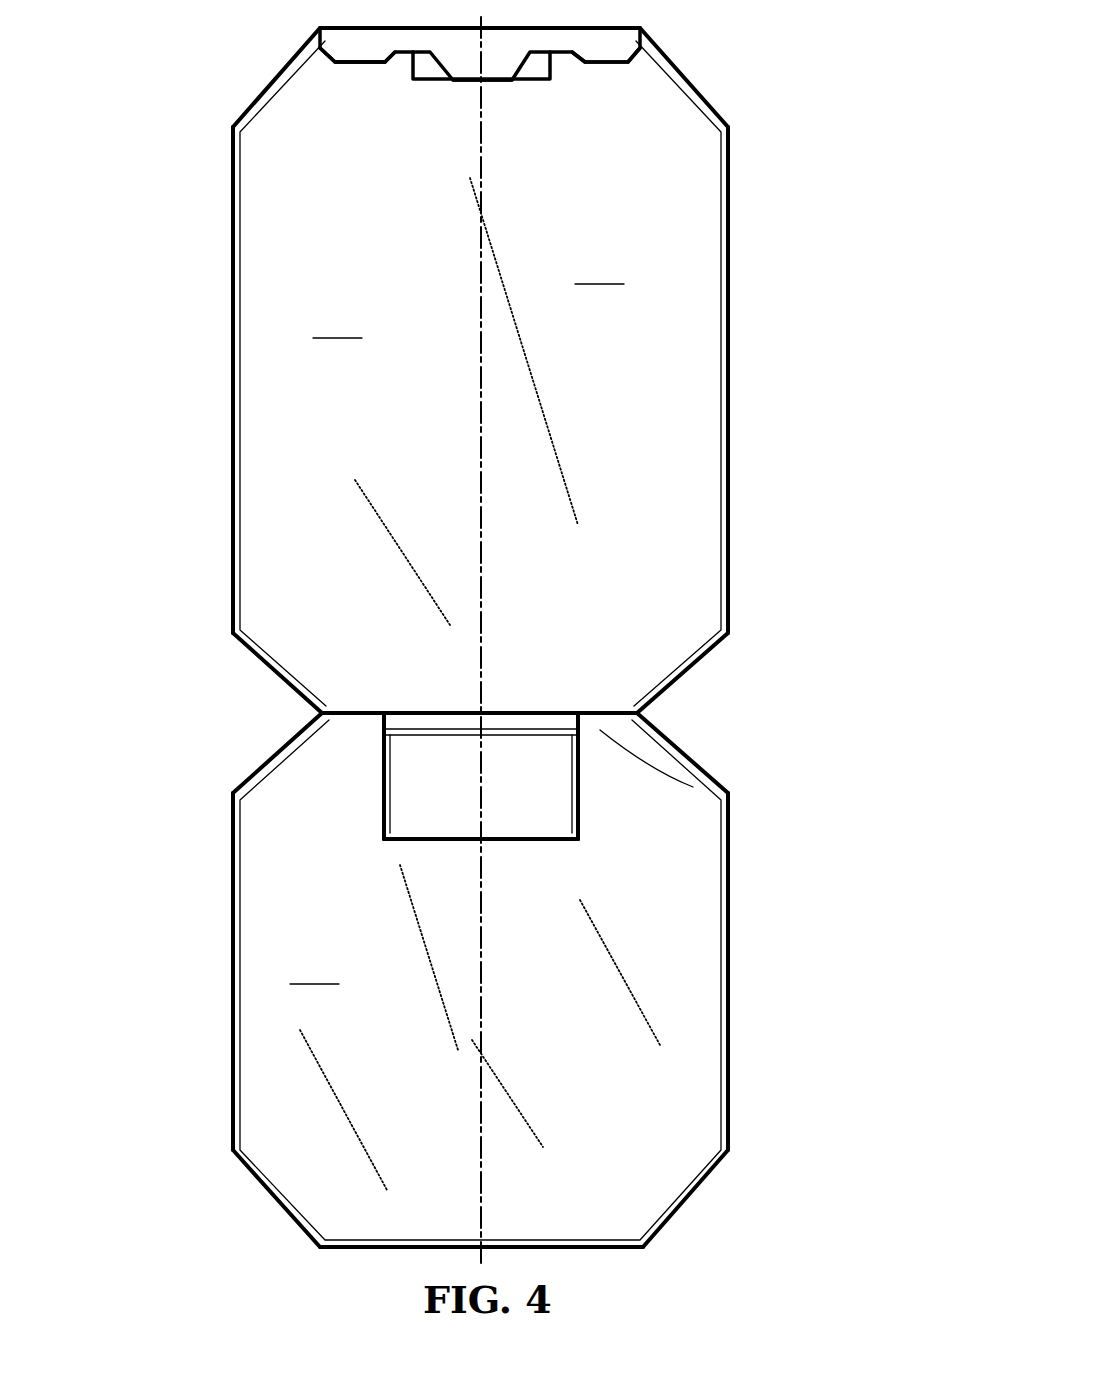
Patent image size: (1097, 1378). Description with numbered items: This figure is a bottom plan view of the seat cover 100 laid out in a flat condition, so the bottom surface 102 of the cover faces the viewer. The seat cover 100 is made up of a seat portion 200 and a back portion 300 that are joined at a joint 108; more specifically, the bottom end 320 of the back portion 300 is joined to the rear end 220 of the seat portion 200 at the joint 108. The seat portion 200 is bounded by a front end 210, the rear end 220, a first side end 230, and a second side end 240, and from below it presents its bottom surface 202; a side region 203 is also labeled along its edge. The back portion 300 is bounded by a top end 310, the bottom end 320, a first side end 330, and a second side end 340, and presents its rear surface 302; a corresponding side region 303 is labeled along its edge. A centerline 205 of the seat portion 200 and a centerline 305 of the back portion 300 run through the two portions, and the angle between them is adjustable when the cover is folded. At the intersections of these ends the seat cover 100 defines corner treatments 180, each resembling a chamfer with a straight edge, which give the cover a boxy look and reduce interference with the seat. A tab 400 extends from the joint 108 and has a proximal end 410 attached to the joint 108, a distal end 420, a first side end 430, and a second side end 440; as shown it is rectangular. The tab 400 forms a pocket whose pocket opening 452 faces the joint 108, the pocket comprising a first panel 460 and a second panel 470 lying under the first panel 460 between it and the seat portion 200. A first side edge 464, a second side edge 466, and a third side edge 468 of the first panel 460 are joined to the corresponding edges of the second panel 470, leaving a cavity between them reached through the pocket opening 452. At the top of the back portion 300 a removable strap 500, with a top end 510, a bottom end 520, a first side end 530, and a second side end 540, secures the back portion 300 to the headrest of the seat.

The seat cover 100 is at (200, 78).
The bottom surface 102 is at (599, 269).
The joint 108 is at (383, 770).
The corner treatments 180 is at (275, 80).
The seat portion 200 is at (713, 945).
The bottom surface 202 is at (314, 969).
The lower sidewall 203 is at (728, 1068).
The centerline 205 is at (481, 1163).
The front end 210 is at (507, 1220).
The rear end 220 is at (697, 765).
The first side end 230 is at (250, 915).
The second side end 240 is at (710, 993).
The back portion 300 is at (700, 270).
The rear surface 302 is at (337, 323).
The upper sidewall 303 is at (732, 432).
The centerline 305 is at (482, 592).
The top end 310 is at (650, 57).
The bottom end 320 is at (507, 692).
The first side end 330 is at (258, 293).
The second side end 340 is at (705, 328).
The tab 400 is at (523, 823).
The proximal end 410 is at (525, 723).
The distal end 420 is at (447, 827).
The first side end 430 is at (383, 803).
The second side end 440 is at (555, 777).
The pocket opening 452 is at (440, 713).
The first panel 460 is at (380, 842).
The first side edge 464 is at (357, 720).
The second side edge 466 is at (580, 810).
The third side edge 468 is at (547, 851).
The second panel 470 is at (467, 717).
The strap 500 is at (623, 50).
The top end 510 is at (537, 19).
The bottom end 520 is at (518, 83).
The first side end 530 is at (338, 47).
The second side end 540 is at (480, 55).